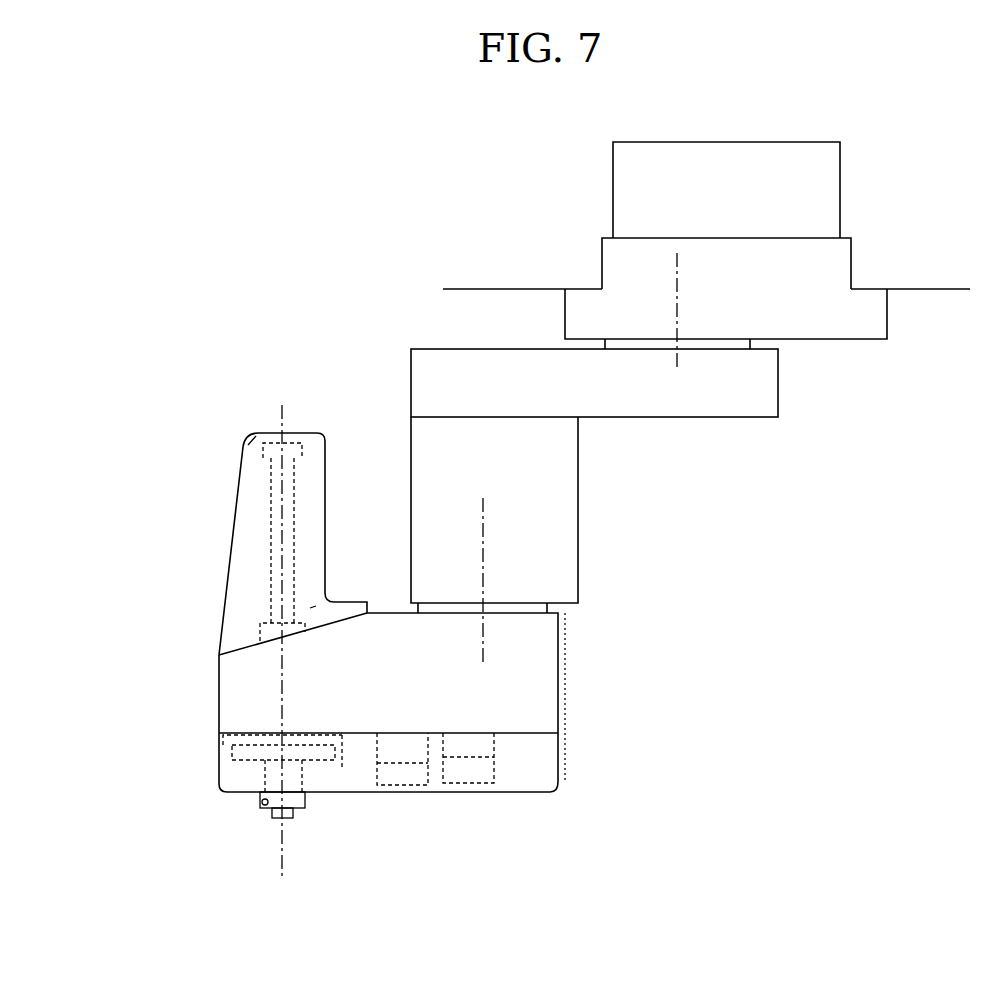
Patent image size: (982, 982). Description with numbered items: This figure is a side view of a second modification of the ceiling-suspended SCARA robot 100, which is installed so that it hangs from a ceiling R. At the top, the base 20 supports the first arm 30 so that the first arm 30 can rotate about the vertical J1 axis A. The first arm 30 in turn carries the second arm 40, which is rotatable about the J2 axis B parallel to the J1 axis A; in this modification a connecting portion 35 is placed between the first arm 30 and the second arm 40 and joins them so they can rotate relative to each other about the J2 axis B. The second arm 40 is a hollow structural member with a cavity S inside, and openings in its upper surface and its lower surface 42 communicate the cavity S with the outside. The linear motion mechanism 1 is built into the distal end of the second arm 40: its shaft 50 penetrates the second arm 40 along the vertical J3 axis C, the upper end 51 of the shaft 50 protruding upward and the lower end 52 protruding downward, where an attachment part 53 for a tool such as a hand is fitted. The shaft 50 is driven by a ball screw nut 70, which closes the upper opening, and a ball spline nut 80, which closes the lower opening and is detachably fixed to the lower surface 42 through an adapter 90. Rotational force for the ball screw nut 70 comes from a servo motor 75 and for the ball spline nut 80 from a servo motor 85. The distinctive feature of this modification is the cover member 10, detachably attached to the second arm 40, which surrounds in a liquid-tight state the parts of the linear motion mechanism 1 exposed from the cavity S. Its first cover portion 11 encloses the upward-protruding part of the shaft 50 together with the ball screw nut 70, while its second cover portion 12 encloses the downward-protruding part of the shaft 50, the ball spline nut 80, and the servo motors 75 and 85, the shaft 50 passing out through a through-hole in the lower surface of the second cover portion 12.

The SCARA robot 100 is at (345, 230).
The linear motion mechanism 1 is at (318, 603).
The cover member 10 is at (115, 590).
The first cover portion 11 is at (222, 637).
The second cover portion 12 is at (219, 750).
The base 20 is at (843, 340).
The first arm 30 is at (722, 418).
The connecting portion 35 is at (578, 516).
The second arm 40 is at (558, 677).
The lower surface 42 is at (535, 735).
The shaft 50 is at (270, 500).
The upper end 51 is at (245, 440).
The lower end 52 is at (250, 814).
The attachment part 53 is at (300, 812).
The ball screw nut 70 is at (250, 622).
The servo motor 75 is at (489, 790).
The ball spline nut 80 is at (255, 778).
The servo motor 85 is at (420, 792).
The adapter 90 is at (343, 770).
The J1 axis A is at (677, 328).
The J2 axis B is at (482, 598).
The J3 axis C is at (283, 627).
The ceiling R is at (936, 289).
The cavity S is at (525, 701).